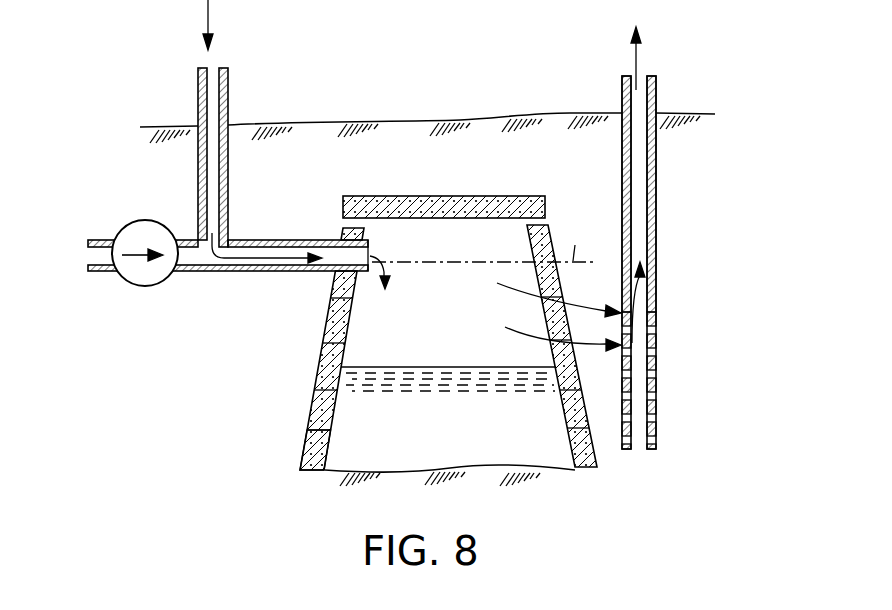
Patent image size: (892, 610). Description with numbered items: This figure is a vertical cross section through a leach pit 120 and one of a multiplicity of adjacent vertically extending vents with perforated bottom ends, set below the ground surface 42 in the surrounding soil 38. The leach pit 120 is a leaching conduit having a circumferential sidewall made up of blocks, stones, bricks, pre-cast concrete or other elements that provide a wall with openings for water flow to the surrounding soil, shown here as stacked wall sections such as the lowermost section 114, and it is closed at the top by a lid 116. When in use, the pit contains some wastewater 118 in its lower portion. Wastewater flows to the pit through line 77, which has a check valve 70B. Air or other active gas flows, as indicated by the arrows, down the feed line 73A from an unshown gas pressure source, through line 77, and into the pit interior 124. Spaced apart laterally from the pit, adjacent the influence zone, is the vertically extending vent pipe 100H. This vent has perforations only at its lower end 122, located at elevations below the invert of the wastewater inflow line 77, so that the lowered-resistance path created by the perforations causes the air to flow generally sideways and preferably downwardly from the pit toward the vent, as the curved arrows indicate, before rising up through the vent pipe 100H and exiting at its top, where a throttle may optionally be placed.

The ground surface 42 is at (393, 121).
The soil 38 is at (373, 177).
The feed line 73A is at (229, 198).
The line 77 is at (93, 239).
The check valve 70B is at (144, 287).
The lid 116 is at (443, 196).
The leach pit 120 is at (288, 402).
The bottom wall section 114 is at (305, 452).
The pit interior 124 is at (398, 319).
The wastewater 118 is at (468, 436).
The vent pipe 100H is at (656, 197).
The lower end 122 is at (657, 343).